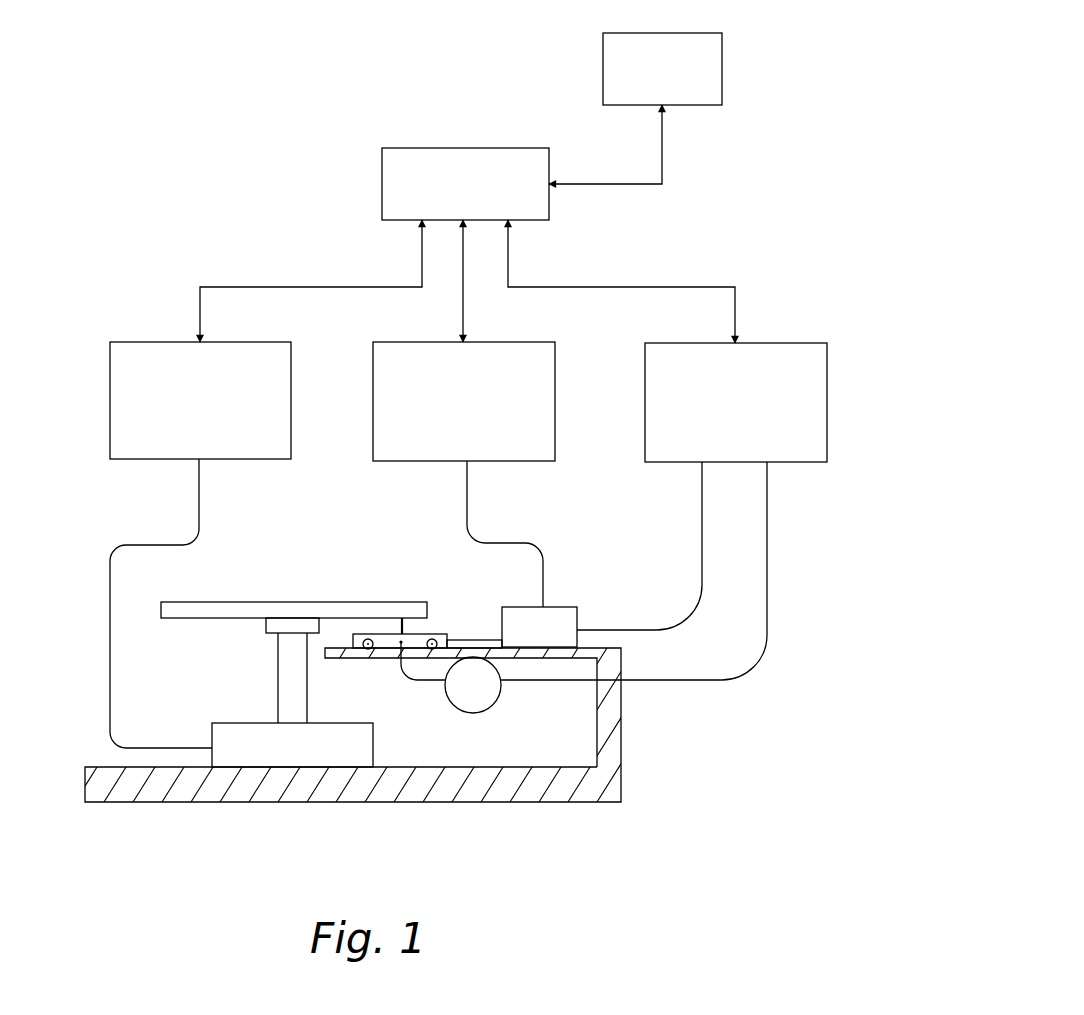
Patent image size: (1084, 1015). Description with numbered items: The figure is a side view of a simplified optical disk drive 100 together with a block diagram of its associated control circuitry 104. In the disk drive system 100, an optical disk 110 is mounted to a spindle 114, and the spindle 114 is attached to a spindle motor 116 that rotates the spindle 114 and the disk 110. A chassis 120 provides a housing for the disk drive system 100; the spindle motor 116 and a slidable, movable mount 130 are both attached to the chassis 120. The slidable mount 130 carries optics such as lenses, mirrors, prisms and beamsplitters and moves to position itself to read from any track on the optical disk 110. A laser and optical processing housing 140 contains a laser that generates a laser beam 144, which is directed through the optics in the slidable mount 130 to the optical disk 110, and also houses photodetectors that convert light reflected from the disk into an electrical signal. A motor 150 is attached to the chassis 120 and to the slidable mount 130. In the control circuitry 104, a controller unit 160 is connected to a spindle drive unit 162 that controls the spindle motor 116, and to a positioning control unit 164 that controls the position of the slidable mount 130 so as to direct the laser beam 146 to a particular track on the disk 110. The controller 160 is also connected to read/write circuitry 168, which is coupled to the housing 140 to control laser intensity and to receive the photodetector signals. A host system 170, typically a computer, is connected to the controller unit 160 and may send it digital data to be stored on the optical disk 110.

The optical disk drive 100 is at (655, 748).
The control circuitry 104 is at (342, 108).
The optical disk 110 is at (198, 601).
The spindle 114 is at (282, 653).
The spindle motor 116 is at (319, 761).
The chassis 120 is at (145, 802).
The slidable mount 130 is at (424, 633).
The laser and optical processing housing 140 is at (577, 606).
The laser beam 144 is at (459, 639).
The laser beam 146 is at (401, 626).
The motor 150 is at (457, 697).
The controller unit 160 is at (382, 177).
The spindle drive unit 162 is at (110, 373).
The positioning control unit 164 is at (828, 372).
The read/write circuitry 168 is at (408, 461).
The host system 170 is at (723, 57).